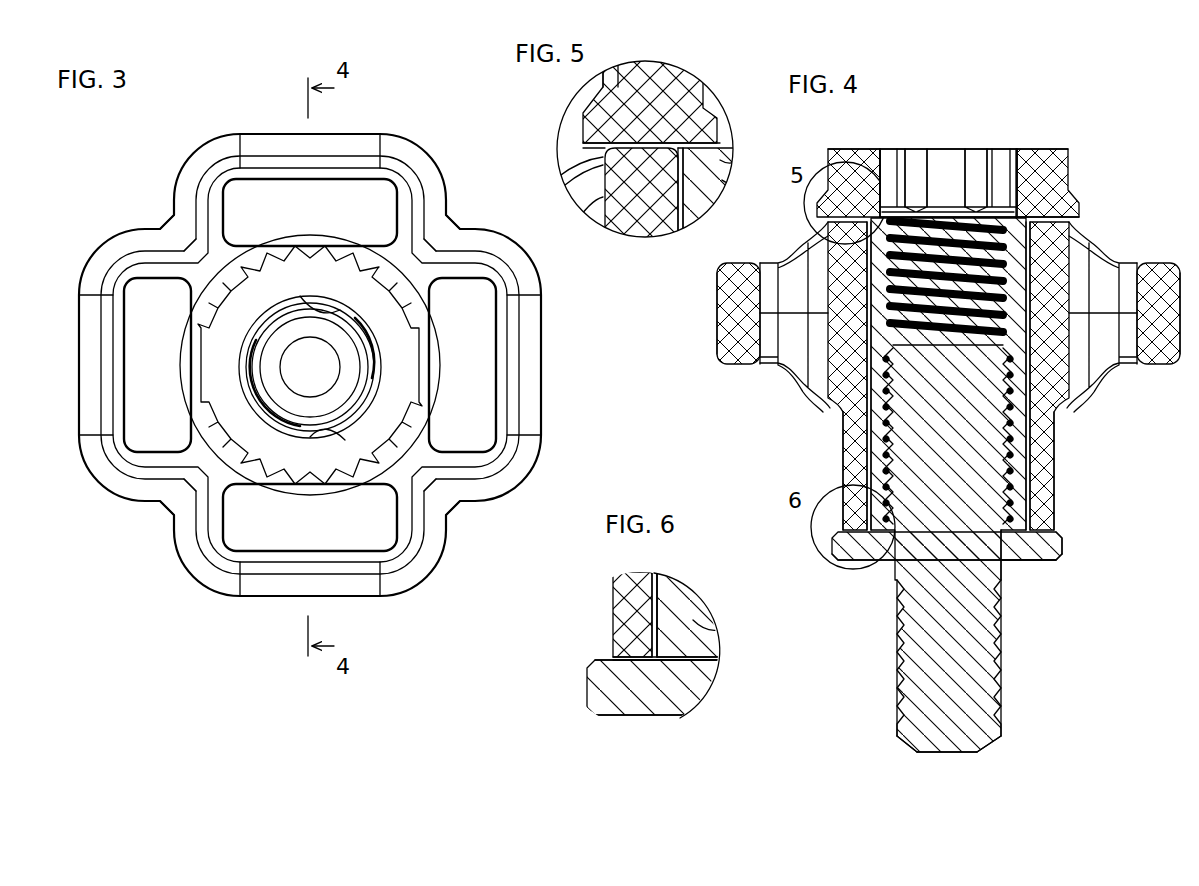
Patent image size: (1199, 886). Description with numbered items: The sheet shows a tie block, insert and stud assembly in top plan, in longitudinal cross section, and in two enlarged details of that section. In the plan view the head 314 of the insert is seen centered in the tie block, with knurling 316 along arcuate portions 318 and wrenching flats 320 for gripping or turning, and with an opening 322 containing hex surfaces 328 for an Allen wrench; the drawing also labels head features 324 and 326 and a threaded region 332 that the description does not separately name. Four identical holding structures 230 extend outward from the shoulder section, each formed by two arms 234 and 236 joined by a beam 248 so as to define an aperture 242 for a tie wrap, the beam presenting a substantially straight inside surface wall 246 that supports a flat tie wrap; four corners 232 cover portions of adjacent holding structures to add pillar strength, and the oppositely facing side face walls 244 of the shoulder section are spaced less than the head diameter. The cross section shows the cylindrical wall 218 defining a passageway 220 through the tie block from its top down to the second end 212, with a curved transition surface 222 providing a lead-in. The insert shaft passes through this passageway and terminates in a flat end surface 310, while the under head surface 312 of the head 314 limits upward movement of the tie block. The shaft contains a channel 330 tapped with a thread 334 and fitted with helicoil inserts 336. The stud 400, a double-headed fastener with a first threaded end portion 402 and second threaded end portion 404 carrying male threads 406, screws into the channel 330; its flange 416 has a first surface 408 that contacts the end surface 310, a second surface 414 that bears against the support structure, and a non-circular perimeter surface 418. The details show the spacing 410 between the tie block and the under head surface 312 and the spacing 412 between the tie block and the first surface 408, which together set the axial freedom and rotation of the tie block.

In FIG. 6, the second end 212 is at (645, 662).
In FIG. 6, the cylindrical wall 218 is at (655, 572).
In FIG. 5, the passageway 220 is at (676, 234).
In FIG. 6, the passageway 220 is at (658, 603).
In FIG. 4, the curved transition surface 222 is at (946, 283).
In FIG. 5, the curved transition surface 222 is at (717, 165).
In FIG. 4, the holding structure 230 is at (1093, 263).
In FIG. 3, the corners 232 is at (167, 253).
In FIG. 3, the arm 234 is at (168, 215).
In FIG. 4, the arm 234 is at (1140, 265).
In FIG. 3, the arm 236 is at (150, 262).
In FIG. 4, the arm 236 is at (780, 368).
In FIG. 3, the aperture 242 is at (142, 400).
In FIG. 4, the side face walls 244 is at (813, 273).
In FIG. 5, the side face walls 244 is at (601, 200).
In FIG. 3, the inside surface wall 246 is at (141, 335).
In FIG. 4, the beam 248 is at (720, 368).
In FIG. 6, the end surface 310 is at (673, 682).
In FIG. 5, the under head surface 312 is at (588, 146).
In FIG. 3, the head 314 is at (170, 517).
In FIG. 4, the head 314 is at (1075, 167).
In FIG. 5, the head 314 is at (706, 78).
In FIG. 3, the knurling 316 is at (247, 523).
In FIG. 4, the knurling 316 is at (818, 146).
In FIG. 5, the knurling 316 is at (611, 58).
In FIG. 3, the arcuate portions 318 is at (298, 268).
In FIG. 3, the wrenching flats 320 is at (140, 364).
In FIG. 4, the opening 322 is at (946, 143).
In FIG. 3, the head top edge 324 is at (346, 447).
In FIG. 4, the head top edge 324 is at (1047, 149).
In FIG. 4, the drive recess 326 is at (967, 149).
In FIG. 3, the hex surfaces 328 is at (352, 322).
In FIG. 4, the hex surfaces 328 is at (925, 149).
In FIG. 4, the channel 330 is at (1067, 182).
In FIG. 4, the internal thread 332 is at (995, 517).
In FIG. 4, the thread 334 is at (843, 420).
In FIG. 4, the helicoil inserts 336 is at (848, 440).
In FIG. 4, the stud 400 is at (933, 765).
In FIG. 4, the first threaded end portion 402 is at (1050, 490).
In FIG. 4, the second threaded end portion 404 is at (975, 690).
In FIG. 4, the male threads 406 is at (897, 646).
In FIG. 4, the first surface 408 is at (1062, 522).
In FIG. 6, the first surface 408 is at (700, 655).
In FIG. 4, the spacing 410 is at (948, 485).
In FIG. 5, the spacing 410 is at (688, 144).
In FIG. 6, the spacing 412 is at (610, 657).
In FIG. 4, the second surface 414 is at (1036, 562).
In FIG. 4, the flange 416 is at (855, 567).
In FIG. 6, the flange 416 is at (588, 720).
In FIG. 4, the perimeter surface 418 is at (832, 548).
In FIG. 6, the perimeter surface 418 is at (588, 692).